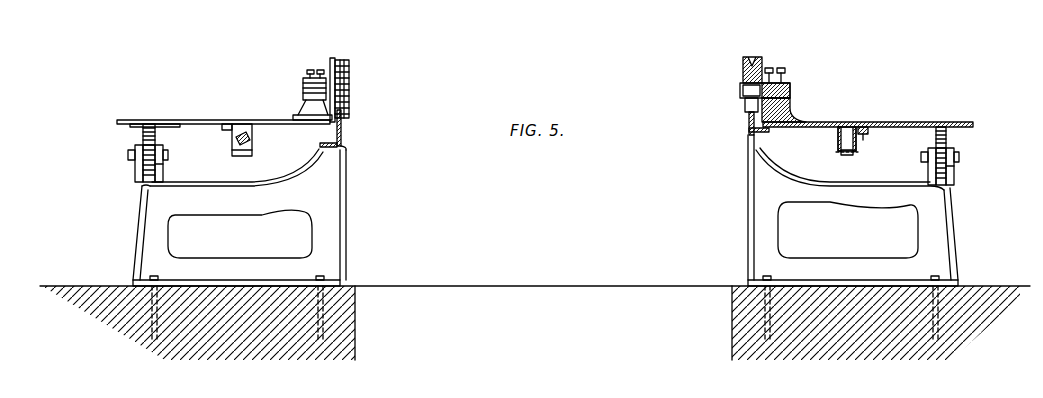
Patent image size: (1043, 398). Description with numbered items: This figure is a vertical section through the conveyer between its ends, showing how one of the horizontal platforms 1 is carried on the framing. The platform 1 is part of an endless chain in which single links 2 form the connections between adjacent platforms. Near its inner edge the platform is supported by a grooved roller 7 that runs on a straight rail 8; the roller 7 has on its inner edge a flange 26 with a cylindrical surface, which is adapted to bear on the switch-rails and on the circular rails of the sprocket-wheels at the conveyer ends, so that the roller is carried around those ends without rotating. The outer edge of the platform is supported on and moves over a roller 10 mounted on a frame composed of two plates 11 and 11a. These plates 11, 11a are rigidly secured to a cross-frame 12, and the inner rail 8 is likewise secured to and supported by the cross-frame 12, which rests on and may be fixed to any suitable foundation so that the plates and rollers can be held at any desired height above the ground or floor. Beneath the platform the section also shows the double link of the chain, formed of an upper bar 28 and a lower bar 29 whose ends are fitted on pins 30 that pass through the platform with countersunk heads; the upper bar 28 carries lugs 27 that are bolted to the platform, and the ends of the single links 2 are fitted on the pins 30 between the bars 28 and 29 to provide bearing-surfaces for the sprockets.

The platform 1 is at (208, 119).
The link 2 is at (252, 133).
The roller 7 is at (331, 63).
The rail 8 is at (342, 131).
The roller 10 is at (143, 136).
The plate 11 is at (135, 174).
The plate 11a is at (162, 173).
The cross-frame 12 is at (545, 237).
The flange 26 is at (350, 74).
The lug 27 is at (868, 131).
The upper bar 28 is at (838, 131).
The lower bar 29 is at (840, 153).
The pin 30 is at (849, 165).